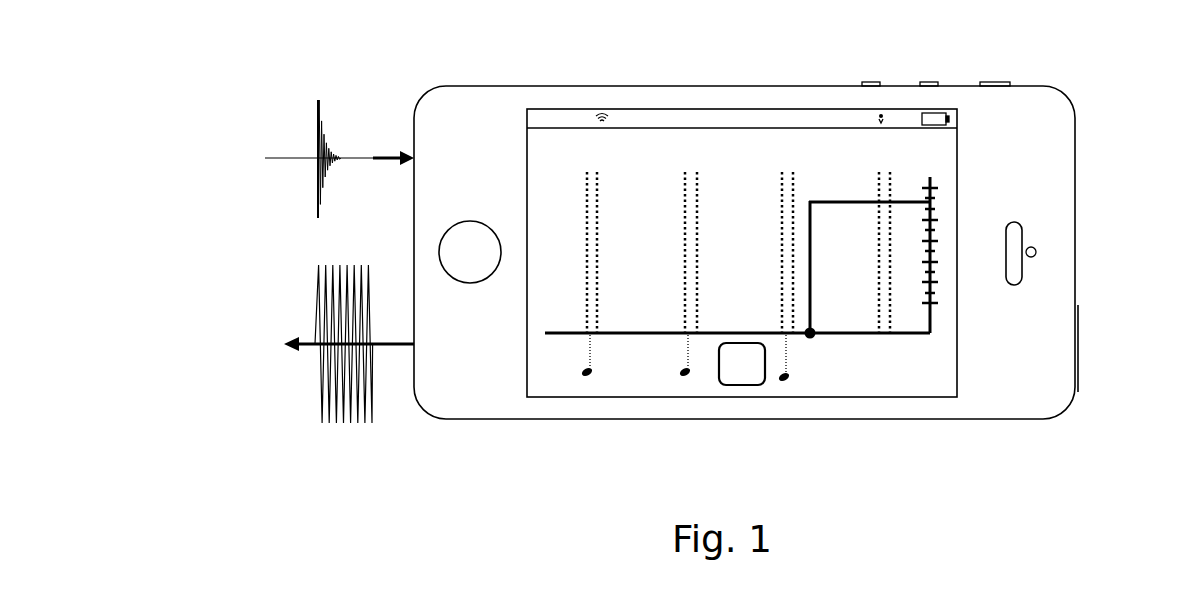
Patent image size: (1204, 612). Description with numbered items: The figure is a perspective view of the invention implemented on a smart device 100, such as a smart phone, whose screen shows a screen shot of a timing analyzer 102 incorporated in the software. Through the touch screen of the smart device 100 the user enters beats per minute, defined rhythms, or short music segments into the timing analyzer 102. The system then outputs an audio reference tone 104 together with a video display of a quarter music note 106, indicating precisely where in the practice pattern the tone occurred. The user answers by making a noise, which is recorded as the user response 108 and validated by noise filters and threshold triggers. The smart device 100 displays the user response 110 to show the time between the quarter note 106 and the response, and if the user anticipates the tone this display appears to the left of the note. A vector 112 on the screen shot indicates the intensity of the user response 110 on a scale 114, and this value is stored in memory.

The smart device 100 is at (733, 78).
The timing analyzer 102 is at (957, 297).
The audio reference tone 104 is at (312, 308).
The quarter music note 106 is at (784, 378).
The user response 108 is at (316, 128).
The user response display 110 is at (811, 283).
The vector 112 is at (827, 202).
The scale 114 is at (937, 209).